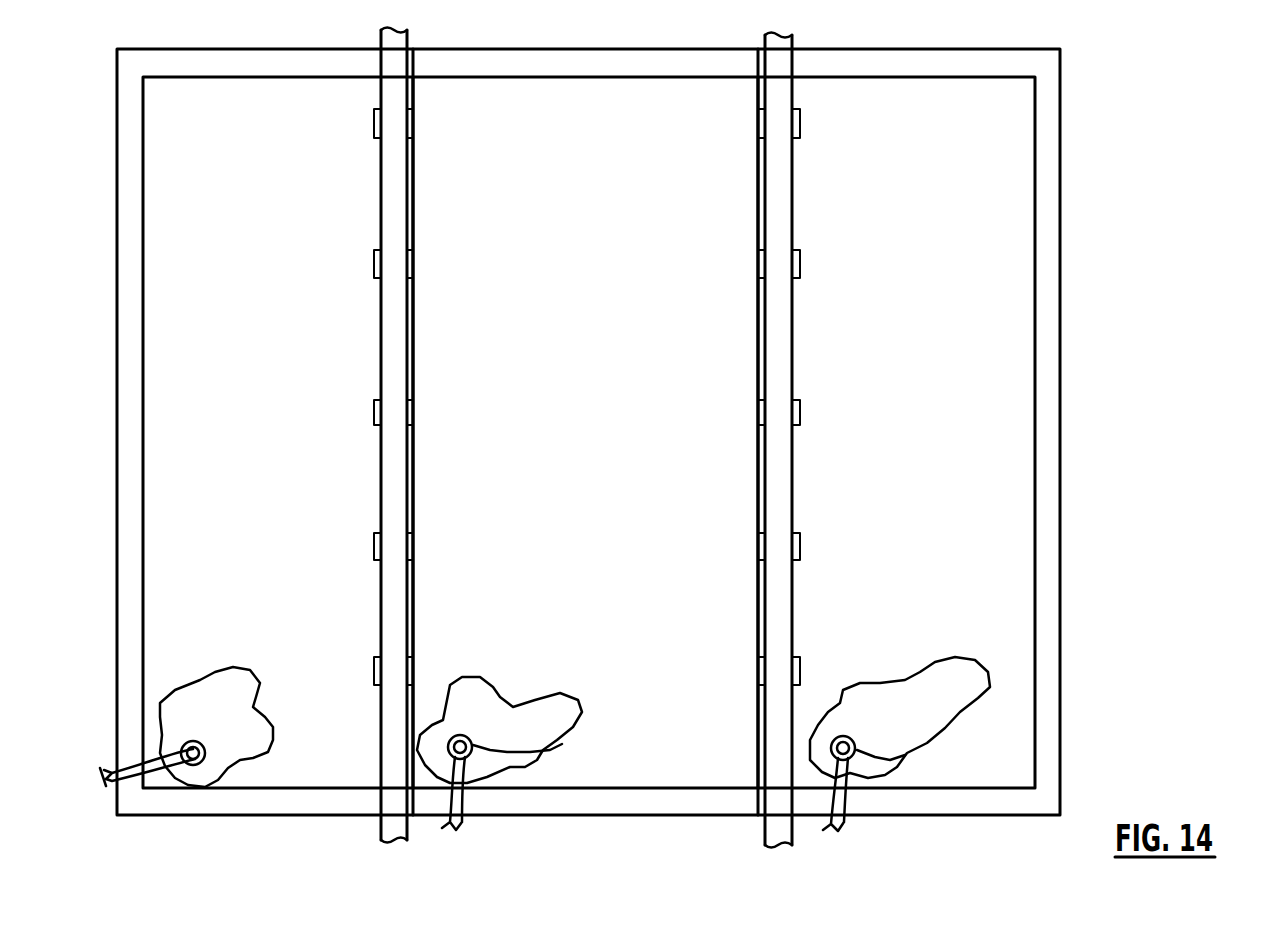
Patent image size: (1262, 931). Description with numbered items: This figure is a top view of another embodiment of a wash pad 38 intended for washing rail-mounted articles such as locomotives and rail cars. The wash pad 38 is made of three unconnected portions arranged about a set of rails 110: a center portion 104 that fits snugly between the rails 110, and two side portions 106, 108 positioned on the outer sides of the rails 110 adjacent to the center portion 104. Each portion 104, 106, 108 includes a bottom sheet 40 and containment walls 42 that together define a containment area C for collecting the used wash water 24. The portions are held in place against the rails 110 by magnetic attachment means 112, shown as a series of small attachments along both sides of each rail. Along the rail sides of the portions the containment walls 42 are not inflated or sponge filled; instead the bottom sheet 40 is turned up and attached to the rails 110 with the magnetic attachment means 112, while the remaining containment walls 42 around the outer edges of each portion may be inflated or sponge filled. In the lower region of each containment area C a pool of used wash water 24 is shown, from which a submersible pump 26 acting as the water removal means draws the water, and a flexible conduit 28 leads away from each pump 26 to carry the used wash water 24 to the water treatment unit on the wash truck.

The used wash water 24 is at (234, 718).
The submersible pump 26 is at (172, 738).
The flexible conduit 28 is at (132, 770).
The wash pad 38 is at (375, 852).
The bottom sheet 40 is at (266, 447).
The containment walls 42 is at (128, 356).
The center portion 104 is at (596, 818).
The side portion 106 is at (296, 818).
The side portion 108 is at (955, 816).
The rails 110 is at (399, 46).
The magnetic attachment means 112 is at (376, 268).
The containment area C is at (251, 259).